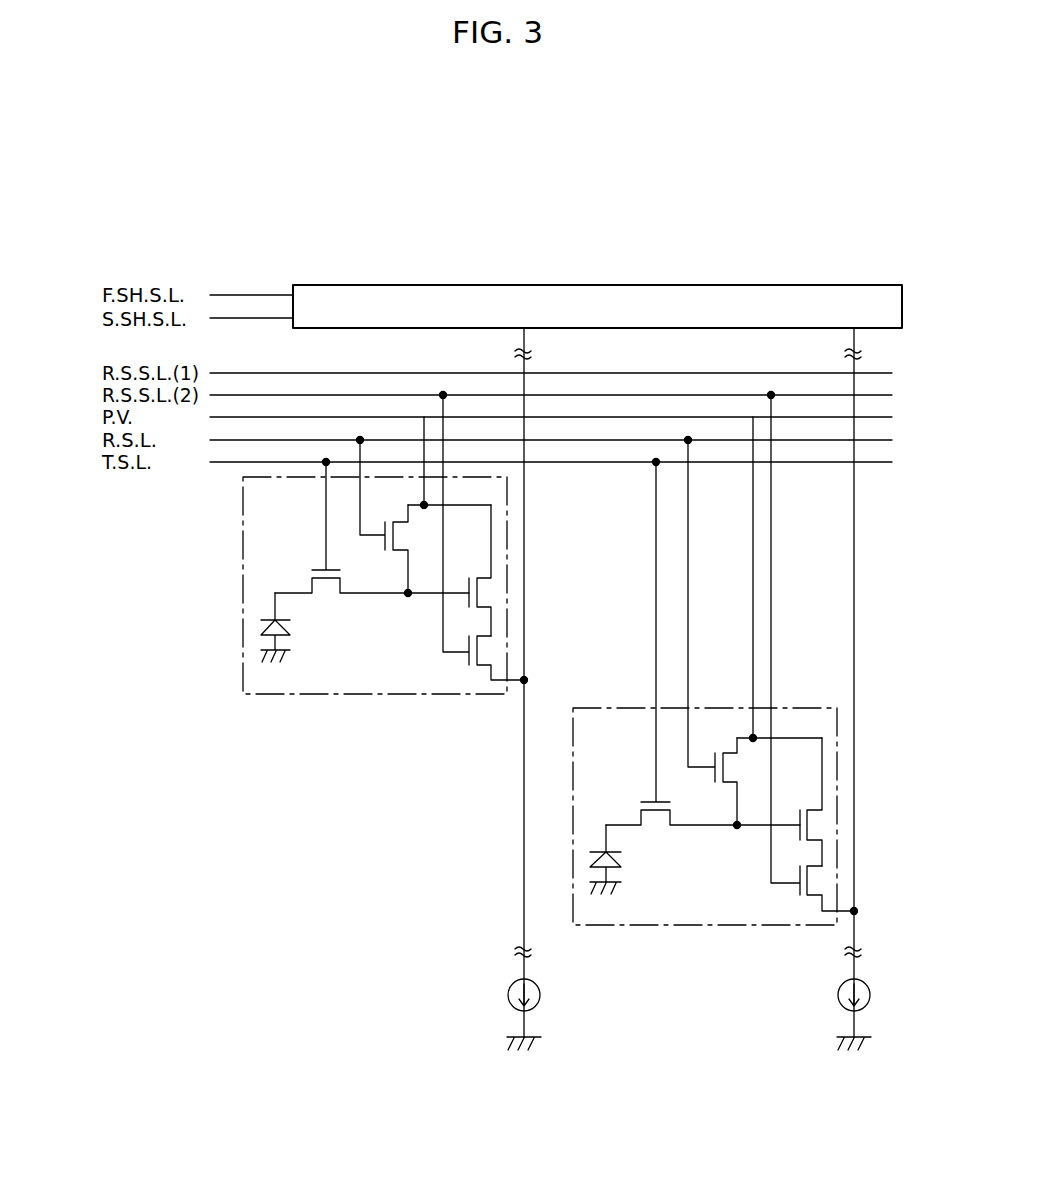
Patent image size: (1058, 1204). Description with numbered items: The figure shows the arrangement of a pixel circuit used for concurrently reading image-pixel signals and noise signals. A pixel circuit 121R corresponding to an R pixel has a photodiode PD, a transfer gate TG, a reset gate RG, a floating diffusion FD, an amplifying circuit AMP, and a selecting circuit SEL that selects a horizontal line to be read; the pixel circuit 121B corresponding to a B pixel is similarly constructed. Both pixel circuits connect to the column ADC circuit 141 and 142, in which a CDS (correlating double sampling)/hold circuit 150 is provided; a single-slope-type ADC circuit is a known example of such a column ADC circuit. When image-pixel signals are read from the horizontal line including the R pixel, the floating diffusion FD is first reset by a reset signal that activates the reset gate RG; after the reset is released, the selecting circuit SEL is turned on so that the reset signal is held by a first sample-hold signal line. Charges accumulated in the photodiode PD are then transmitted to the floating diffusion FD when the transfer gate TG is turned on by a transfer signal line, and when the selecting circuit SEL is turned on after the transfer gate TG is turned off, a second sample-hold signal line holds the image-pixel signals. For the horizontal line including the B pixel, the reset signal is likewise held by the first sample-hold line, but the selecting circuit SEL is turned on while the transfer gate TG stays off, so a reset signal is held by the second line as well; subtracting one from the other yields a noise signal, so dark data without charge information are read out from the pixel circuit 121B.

The column ADC circuit 141 is at (597, 276).
The column ADC circuit 142 is at (597, 271).
The CDS/hold circuit 150 is at (833, 283).
The pixel circuit 121R is at (386, 597).
The pixel circuit 121B is at (793, 702).
The transfer gate TG is at (294, 582).
The photodiode PD is at (251, 634).
The reset gate RG is at (383, 564).
The floating diffusion FD is at (429, 607).
The amplifying circuit AMP is at (504, 551).
The selecting circuit SEL is at (477, 681).